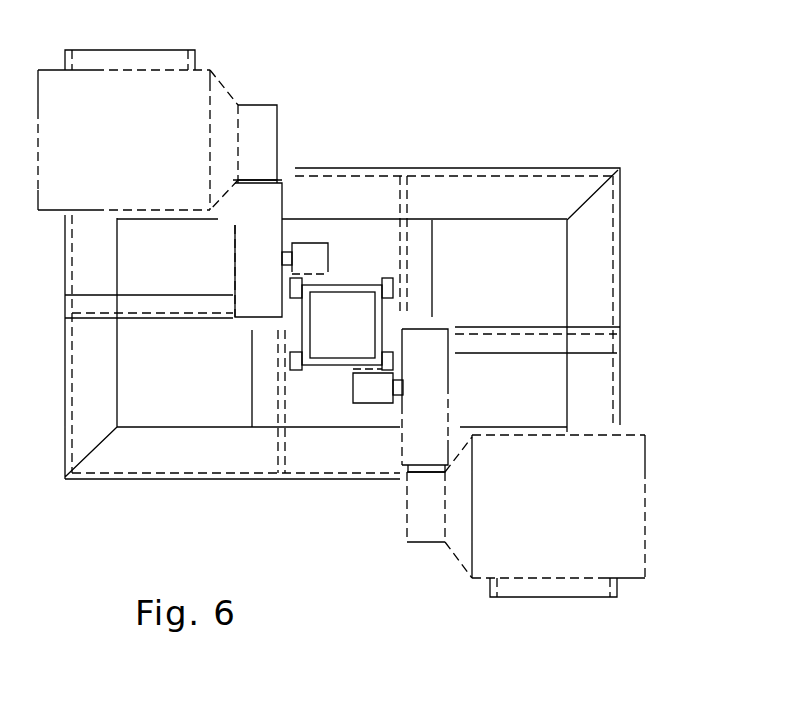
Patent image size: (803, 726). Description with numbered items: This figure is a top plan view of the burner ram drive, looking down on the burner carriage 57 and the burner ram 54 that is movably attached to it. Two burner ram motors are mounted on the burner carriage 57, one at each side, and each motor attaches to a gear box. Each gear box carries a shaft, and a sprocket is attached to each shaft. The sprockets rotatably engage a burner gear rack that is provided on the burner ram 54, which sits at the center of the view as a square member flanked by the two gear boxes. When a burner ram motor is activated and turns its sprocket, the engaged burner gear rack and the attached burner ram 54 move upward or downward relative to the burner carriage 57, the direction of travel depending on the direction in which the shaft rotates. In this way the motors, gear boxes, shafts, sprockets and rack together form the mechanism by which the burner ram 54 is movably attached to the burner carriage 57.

The burner ram 54 is at (302, 335).
The burner carriage 57 is at (620, 233).